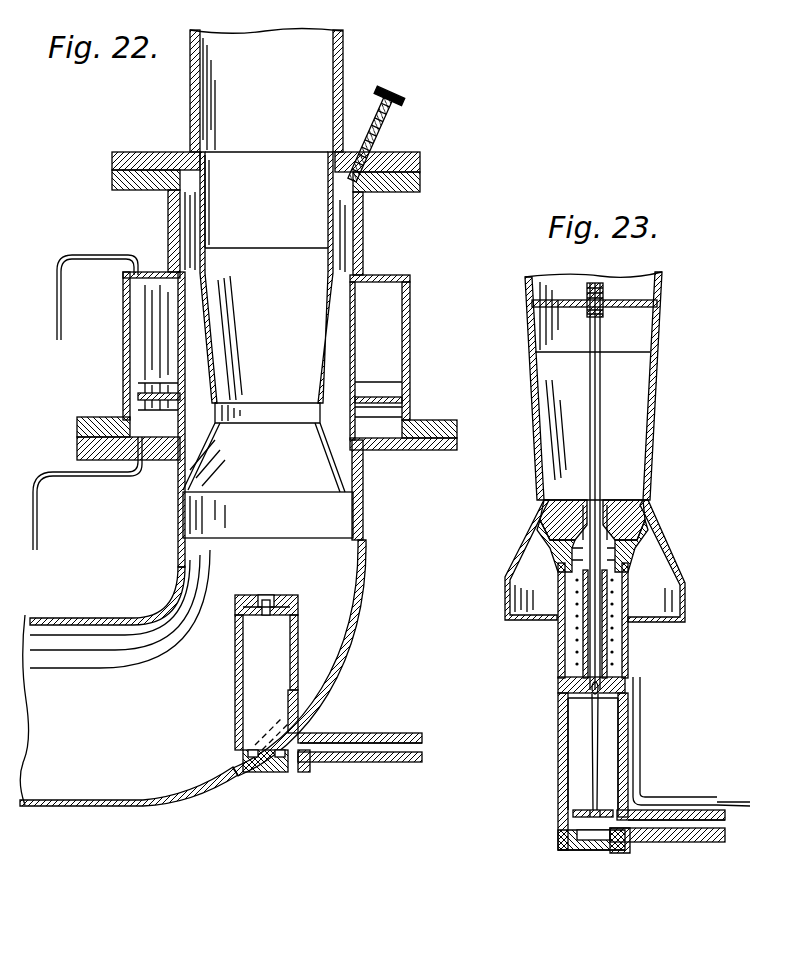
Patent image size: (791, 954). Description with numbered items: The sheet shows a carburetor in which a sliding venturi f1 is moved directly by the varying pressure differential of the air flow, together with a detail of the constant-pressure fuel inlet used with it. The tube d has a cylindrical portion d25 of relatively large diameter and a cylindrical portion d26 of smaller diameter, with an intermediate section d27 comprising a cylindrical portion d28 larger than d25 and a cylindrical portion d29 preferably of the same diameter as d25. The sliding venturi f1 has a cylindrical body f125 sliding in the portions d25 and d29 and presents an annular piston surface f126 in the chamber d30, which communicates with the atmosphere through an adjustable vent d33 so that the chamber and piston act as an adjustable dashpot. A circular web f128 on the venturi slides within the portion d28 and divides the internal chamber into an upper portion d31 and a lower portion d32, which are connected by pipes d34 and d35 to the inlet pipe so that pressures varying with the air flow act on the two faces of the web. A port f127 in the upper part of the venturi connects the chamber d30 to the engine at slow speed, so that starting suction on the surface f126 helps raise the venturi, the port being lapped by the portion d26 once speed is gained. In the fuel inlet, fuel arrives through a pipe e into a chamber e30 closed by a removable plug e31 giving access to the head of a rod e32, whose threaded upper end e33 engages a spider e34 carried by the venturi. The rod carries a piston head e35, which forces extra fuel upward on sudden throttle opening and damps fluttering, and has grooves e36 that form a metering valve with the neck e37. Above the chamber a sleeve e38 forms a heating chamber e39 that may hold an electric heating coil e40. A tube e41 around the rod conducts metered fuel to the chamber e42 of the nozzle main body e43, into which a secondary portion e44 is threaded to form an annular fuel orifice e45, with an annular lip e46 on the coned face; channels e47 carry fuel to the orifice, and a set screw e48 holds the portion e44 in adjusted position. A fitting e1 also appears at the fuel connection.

In FIG. 22, the tube d is at (99, 598).
In FIG. 22, the cylindrical portion of relatively large diameter d25 is at (363, 503).
In FIG. 22, the cylindrical portion of relatively smaller diameter d26 is at (190, 150).
In FIG. 22, the intermediate section d27 is at (437, 430).
In FIG. 22, the cylindrical portion of relatively large diameter d28 is at (410, 346).
In FIG. 22, the cylindrical portion of smaller diameter d29 is at (365, 231).
In FIG. 22, the chamber d30 is at (190, 216).
In FIG. 22, the upper portion of internal chamber d31 is at (146, 318).
In FIG. 22, the lower portion of internal chamber d32 is at (130, 420).
In FIG. 22, the adjustable inlet or outlet d33 is at (388, 135).
In FIG. 22, the pipe d34 is at (60, 284).
In FIG. 22, the pipe d35 is at (72, 478).
In FIG. 22, the sliding venturi f1 is at (325, 334).
In FIG. 23, the sliding venturi f1 is at (655, 414).
In FIG. 22, the cylindrical body f125 is at (358, 322).
In FIG. 22, the annular piston surface f126 is at (365, 265).
In FIG. 22, the port f127 is at (202, 180).
In FIG. 22, the circular web f128 is at (135, 393).
In FIG. 22, the pipe e is at (350, 748).
In FIG. 23, the pipe e is at (685, 826).
In FIG. 22, the fitting e1 is at (278, 580).
In FIG. 22, the chamber e30 is at (238, 697).
In FIG. 23, the chamber e30 is at (578, 769).
In FIG. 22, the plug e31 is at (268, 772).
In FIG. 23, the plug e31 is at (602, 852).
In FIG. 23, the rod e32 is at (590, 812).
In FIG. 23, the threaded upper end e33 is at (605, 292).
In FIG. 23, the spider e34 is at (640, 305).
In FIG. 23, the piston head e35 is at (575, 828).
In FIG. 23, the grooves e36 is at (594, 740).
In FIG. 22, the neck e37 is at (238, 607).
In FIG. 23, the neck e37 is at (560, 694).
In FIG. 23, the sleeve e38 is at (560, 666).
In FIG. 23, the heating chamber e39 is at (575, 620).
In FIG. 23, the electric heating coil e40 is at (727, 800).
In FIG. 23, the tube e41 is at (630, 632).
In FIG. 23, the chamber e42 is at (627, 561).
In FIG. 23, the main body of fuel nozzle e43 is at (632, 534).
In FIG. 23, the secondary portion e44 is at (550, 494).
In FIG. 23, the annular fuel orifice e45 is at (640, 499).
In FIG. 23, the annular lip e46 is at (650, 508).
In FIG. 23, the channels e47 is at (580, 497).
In FIG. 23, the set screw e48 is at (615, 497).